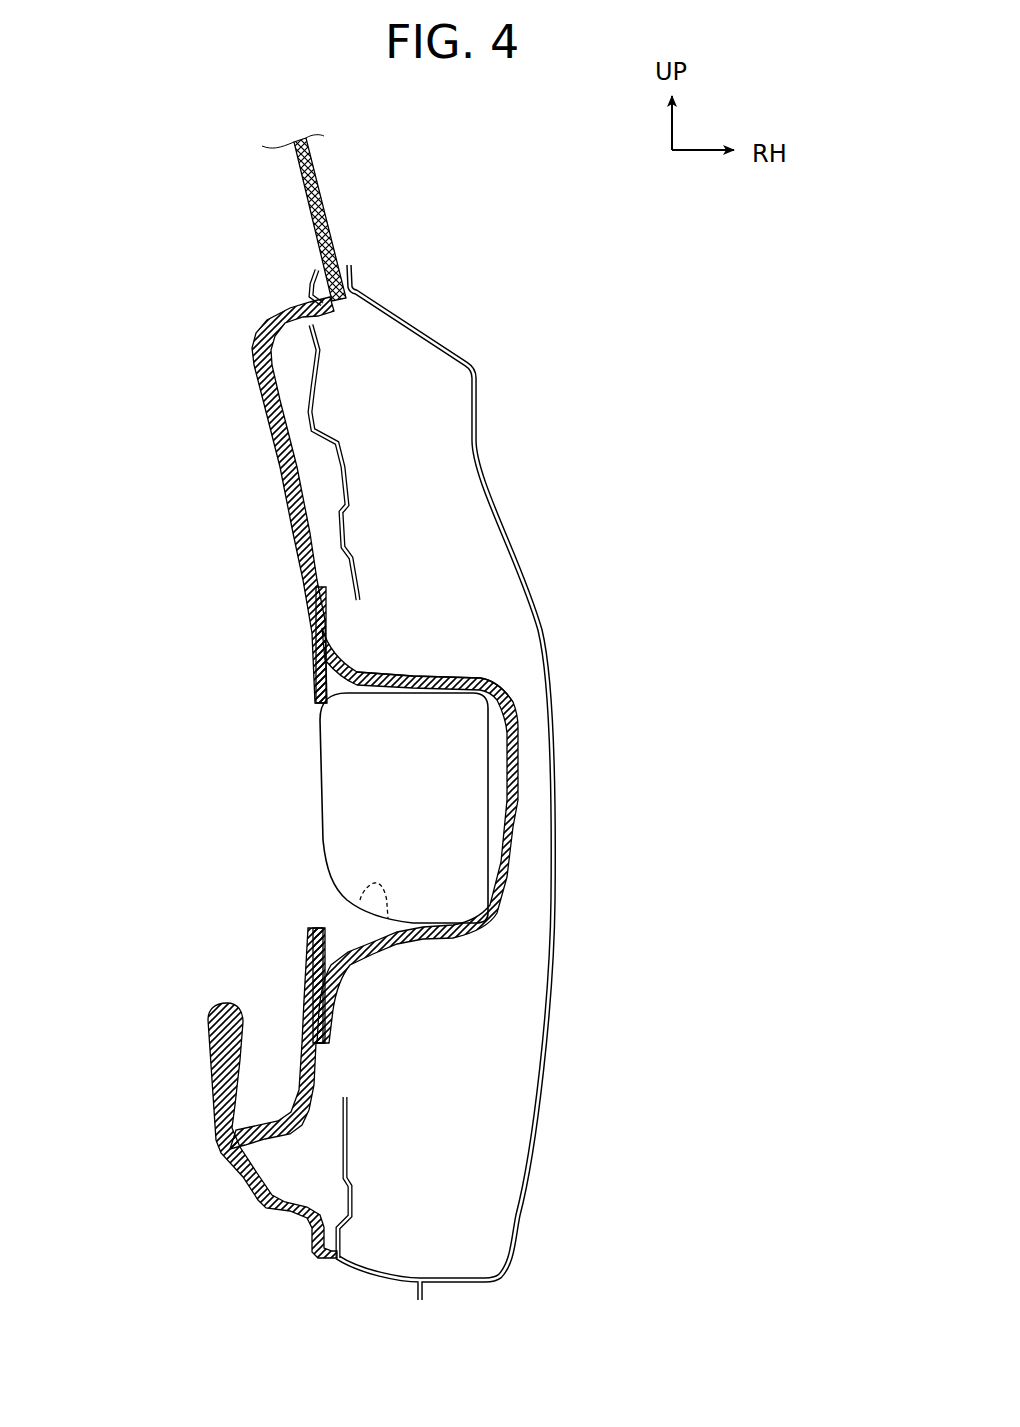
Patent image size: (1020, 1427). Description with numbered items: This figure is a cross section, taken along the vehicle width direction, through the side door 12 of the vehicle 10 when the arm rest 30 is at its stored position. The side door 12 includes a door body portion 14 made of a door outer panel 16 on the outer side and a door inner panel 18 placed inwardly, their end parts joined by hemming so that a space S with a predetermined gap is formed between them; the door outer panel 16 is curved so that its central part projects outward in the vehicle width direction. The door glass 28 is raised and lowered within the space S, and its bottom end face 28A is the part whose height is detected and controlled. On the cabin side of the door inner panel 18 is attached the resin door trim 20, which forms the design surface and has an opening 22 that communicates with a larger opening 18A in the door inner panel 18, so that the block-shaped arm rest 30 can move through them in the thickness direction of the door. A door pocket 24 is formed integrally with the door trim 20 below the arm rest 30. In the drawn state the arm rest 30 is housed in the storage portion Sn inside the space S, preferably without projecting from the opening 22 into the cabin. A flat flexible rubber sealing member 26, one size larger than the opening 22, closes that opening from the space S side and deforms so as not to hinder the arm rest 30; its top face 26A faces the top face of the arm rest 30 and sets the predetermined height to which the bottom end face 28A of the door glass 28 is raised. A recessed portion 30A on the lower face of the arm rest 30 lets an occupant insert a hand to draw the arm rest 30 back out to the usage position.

The vehicle 10 is at (384, 717).
The side door 12 is at (495, 782).
The door body portion 14 is at (550, 628).
The door outer panel 16 is at (530, 1188).
The door inner panel 18 is at (350, 1145).
The opening 18A is at (356, 600).
The door trim 20 is at (293, 514).
The opening 22 is at (316, 704).
The door pocket 24 is at (247, 1034).
The sealing member 26 is at (500, 835).
The top face 26A is at (437, 678).
The door glass 28 is at (318, 190).
The bottom end face 28A is at (345, 300).
The arm rest 30 is at (355, 854).
The recessed portion 30A is at (382, 925).
The space S is at (455, 632).
The storage portion Sn is at (345, 928).